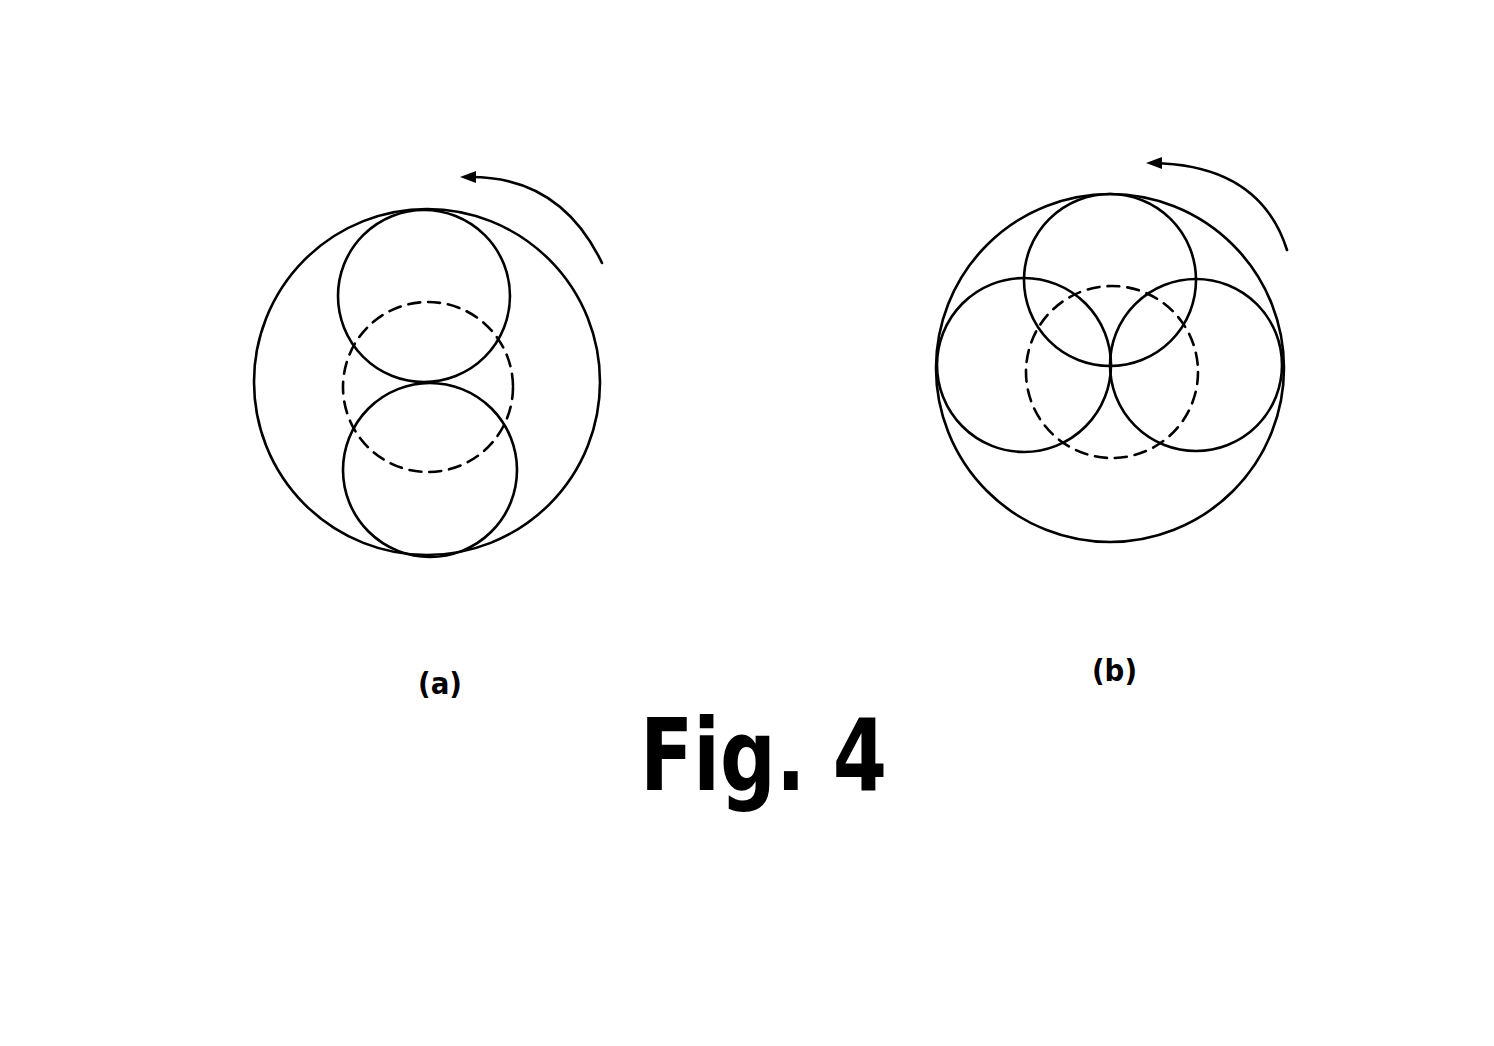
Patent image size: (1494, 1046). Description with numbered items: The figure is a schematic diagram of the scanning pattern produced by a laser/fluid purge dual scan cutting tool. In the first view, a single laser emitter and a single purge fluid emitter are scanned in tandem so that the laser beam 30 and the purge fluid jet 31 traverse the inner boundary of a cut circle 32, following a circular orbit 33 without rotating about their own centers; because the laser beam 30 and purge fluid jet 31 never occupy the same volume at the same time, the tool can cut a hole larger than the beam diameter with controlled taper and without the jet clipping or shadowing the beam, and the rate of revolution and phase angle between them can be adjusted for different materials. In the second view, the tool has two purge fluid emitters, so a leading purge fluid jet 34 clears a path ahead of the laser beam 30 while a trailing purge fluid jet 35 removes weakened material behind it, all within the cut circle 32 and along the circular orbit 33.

The laser beam 30 is at (510, 285).
The purge fluid jet 31 is at (513, 503).
The cut circle 32 is at (600, 425).
The circular orbit 33 is at (343, 388).
The leading purge fluid jet 34 is at (950, 390).
The trailing purge fluid jet 35 is at (1277, 365).